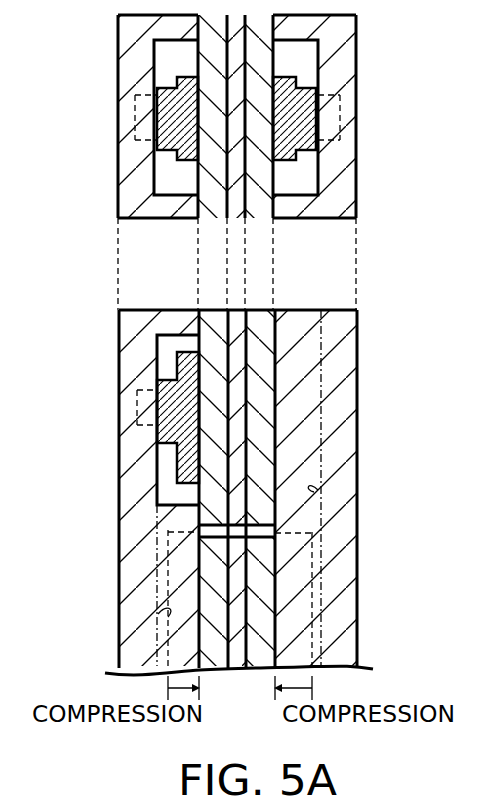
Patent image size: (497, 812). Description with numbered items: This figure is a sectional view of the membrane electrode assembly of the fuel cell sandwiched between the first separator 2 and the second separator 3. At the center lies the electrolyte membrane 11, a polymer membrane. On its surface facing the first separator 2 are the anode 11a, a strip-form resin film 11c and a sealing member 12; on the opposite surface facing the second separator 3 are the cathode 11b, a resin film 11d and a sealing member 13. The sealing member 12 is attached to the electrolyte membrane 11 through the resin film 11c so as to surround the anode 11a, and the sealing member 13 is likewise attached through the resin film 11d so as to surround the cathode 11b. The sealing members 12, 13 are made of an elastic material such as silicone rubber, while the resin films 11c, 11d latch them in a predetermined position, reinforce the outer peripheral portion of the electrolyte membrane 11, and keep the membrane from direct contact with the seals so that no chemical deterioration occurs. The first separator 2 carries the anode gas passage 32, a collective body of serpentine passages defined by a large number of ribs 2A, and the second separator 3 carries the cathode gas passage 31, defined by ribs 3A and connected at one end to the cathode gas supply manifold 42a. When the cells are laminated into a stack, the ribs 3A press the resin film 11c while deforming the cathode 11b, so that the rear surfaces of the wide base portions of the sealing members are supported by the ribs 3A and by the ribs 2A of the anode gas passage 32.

The first separator 2 is at (120, 332).
The ribs 2A is at (176, 520).
The second separator 3 is at (357, 336).
The ribs 3A is at (310, 428).
The electrolyte membrane 11 is at (240, 219).
The anode 11a is at (160, 578).
The cathode 11b is at (312, 562).
The resin film 11c is at (222, 219).
The resin film 11d is at (259, 219).
The sealing member 12 is at (160, 77).
The sealing member 13 is at (316, 77).
The cathode gas passage 31 is at (330, 490).
The anode gas passage 32 is at (165, 620).
The cathode gas supply manifold 42a is at (340, 269).